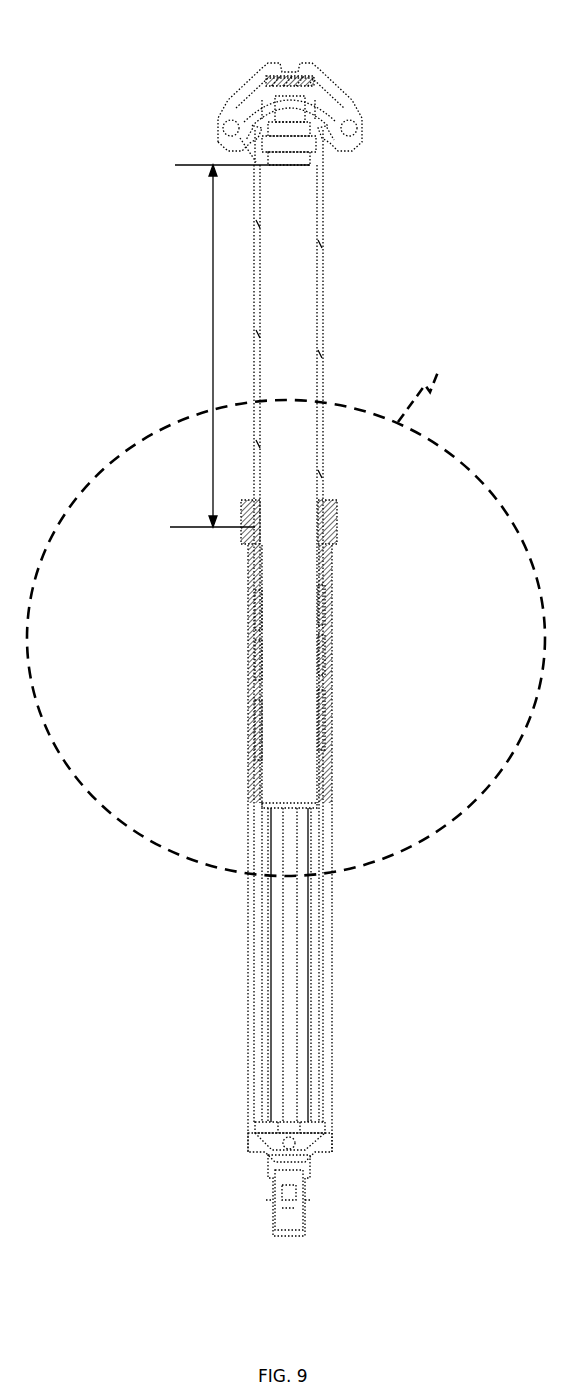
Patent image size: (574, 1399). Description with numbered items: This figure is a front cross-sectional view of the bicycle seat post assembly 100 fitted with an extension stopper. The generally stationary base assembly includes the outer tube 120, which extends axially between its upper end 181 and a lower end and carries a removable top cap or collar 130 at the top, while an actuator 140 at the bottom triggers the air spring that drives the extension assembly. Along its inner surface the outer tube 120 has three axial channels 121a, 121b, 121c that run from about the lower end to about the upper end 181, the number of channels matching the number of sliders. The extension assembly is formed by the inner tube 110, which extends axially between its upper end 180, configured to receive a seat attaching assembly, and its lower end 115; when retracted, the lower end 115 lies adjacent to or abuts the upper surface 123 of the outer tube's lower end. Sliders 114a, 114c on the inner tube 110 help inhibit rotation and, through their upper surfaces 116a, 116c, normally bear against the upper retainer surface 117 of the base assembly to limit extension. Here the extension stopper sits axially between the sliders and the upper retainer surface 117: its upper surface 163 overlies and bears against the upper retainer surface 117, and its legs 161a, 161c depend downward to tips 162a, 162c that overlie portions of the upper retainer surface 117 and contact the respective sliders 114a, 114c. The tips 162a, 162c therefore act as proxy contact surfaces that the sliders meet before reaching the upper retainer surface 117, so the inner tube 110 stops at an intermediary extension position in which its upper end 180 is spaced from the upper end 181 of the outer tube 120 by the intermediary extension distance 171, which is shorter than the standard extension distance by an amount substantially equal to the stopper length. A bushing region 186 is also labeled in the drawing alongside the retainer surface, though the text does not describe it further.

The bicycle seat post assembly 100 is at (378, 58).
The upper end of inner tube 180 is at (322, 166).
The inner tube 110 is at (318, 305).
The intermediary extension distance 171 is at (213, 332).
The upper end of outer tube 181 is at (247, 520).
The collar 130 is at (336, 512).
The upper surface of shoulder portion 163 is at (183, 674).
The upper retainer surface 117 is at (183, 674).
The bushing 186 is at (400, 668).
The first leg 161a is at (252, 608).
The third leg 161c is at (320, 612).
The upper surface of first slider 116a is at (183, 665).
The tip of first leg 162a is at (256, 655).
The upper surface of third slider 116c is at (386, 643).
The tip of third leg 162c is at (318, 658).
The first slider 114a is at (254, 725).
The third slider 114c is at (318, 695).
The outer tube 120 is at (293, 843).
The lower end of inner tube 115 is at (312, 804).
The first axial channel 121a is at (254, 1080).
The second axial channel 121b is at (285, 1013).
The third axial channel 121c is at (320, 950).
The upper surface of lower end 123 is at (323, 1099).
The actuator 140 is at (308, 1173).